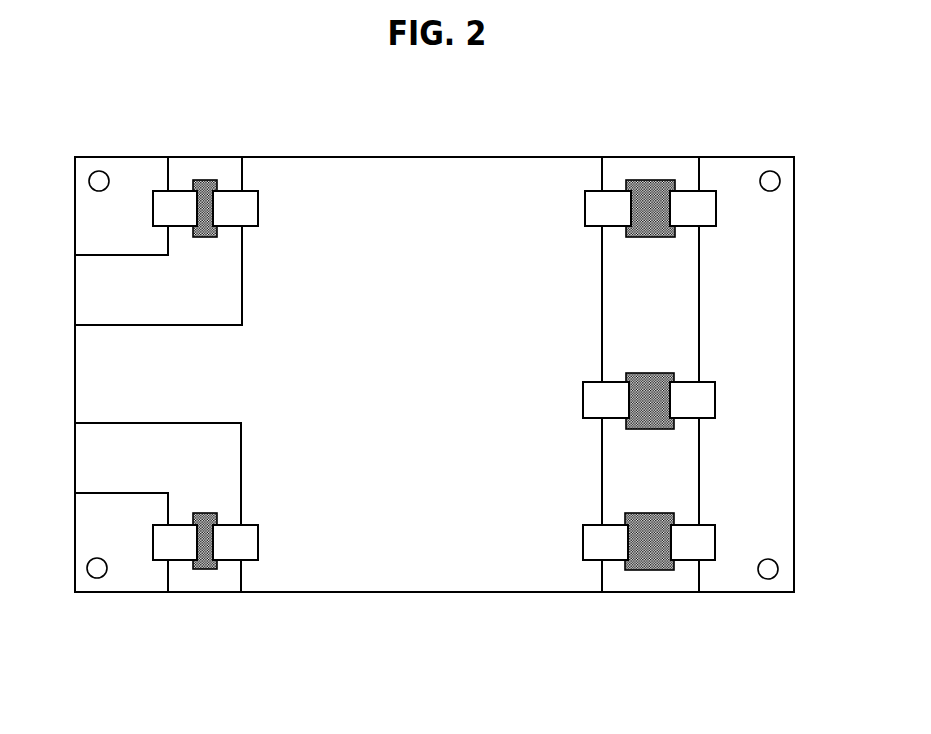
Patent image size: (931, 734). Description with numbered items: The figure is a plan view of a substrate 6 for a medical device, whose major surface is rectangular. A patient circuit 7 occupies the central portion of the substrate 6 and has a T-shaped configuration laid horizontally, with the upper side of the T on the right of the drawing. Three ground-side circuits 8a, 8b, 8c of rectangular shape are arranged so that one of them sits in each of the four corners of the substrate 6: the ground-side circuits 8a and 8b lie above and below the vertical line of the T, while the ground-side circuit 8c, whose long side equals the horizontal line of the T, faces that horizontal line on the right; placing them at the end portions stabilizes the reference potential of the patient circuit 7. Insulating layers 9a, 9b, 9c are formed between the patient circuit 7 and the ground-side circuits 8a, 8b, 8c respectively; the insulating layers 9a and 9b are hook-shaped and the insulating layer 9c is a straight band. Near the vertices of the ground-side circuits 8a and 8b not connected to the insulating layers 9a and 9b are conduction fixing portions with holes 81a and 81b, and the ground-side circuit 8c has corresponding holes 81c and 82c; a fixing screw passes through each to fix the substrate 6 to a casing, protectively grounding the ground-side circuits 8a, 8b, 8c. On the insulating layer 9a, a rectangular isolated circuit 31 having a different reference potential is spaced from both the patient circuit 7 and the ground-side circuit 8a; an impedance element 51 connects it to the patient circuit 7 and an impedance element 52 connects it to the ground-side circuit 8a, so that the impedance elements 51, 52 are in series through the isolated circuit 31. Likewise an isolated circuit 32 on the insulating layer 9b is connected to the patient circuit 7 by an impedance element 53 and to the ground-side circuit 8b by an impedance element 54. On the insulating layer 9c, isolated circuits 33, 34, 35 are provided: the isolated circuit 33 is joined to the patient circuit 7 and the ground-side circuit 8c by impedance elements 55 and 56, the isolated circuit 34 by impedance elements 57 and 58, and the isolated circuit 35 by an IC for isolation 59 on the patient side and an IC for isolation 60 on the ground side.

The substrate 6 is at (489, 135).
The patient circuit 7 is at (409, 182).
The ground-side circuit 8a is at (85, 222).
The ground-side circuit 8b is at (85, 529).
The ground-side circuit 8c is at (772, 278).
The insulating layer 9a is at (85, 289).
The insulating layer 9b is at (85, 459).
The insulating layer 9c is at (677, 317).
The isolated circuit 31 is at (202, 180).
The isolated circuit 32 is at (200, 569).
The isolated circuit 33 is at (648, 182).
The isolated circuit 34 is at (652, 557).
The isolated circuit 35 is at (650, 382).
The impedance element 51 is at (248, 185).
The impedance element 52 is at (162, 185).
The impedance element 53 is at (246, 562).
The impedance element 54 is at (160, 562).
The impedance element 55 is at (593, 185).
The impedance element 56 is at (707, 185).
The impedance element 57 is at (592, 562).
The impedance element 58 is at (705, 562).
The IC for isolation 59 is at (583, 397).
The IC for isolation 60 is at (717, 393).
The hole 81a is at (103, 171).
The hole 81b is at (98, 578).
The hole 81c is at (770, 171).
The hole 82c is at (768, 579).